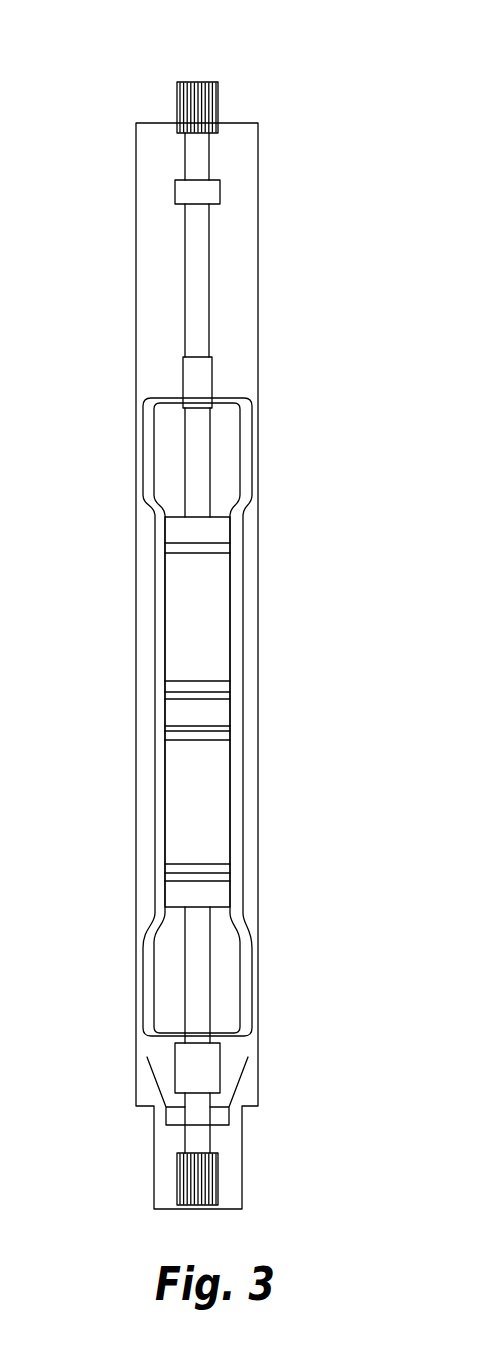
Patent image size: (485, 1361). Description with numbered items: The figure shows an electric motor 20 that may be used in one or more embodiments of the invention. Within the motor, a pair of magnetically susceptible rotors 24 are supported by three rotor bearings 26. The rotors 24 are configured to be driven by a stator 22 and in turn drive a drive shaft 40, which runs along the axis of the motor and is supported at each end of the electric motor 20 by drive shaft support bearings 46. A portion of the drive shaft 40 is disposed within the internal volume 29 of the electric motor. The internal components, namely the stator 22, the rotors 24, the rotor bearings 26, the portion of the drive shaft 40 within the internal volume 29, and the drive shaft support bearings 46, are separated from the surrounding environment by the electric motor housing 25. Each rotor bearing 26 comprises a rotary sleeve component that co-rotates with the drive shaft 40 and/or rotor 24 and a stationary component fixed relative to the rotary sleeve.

The electric motor 20 is at (306, 86).
The stator 22 is at (158, 766).
The magnetically susceptible rotors 24 is at (200, 603).
The electric motor housing 25 is at (136, 348).
The rotor bearings 26 is at (175, 532).
The internal volume 29 is at (223, 450).
The drive shaft 40 is at (200, 490).
The drive shaft support bearings 46 is at (210, 186).